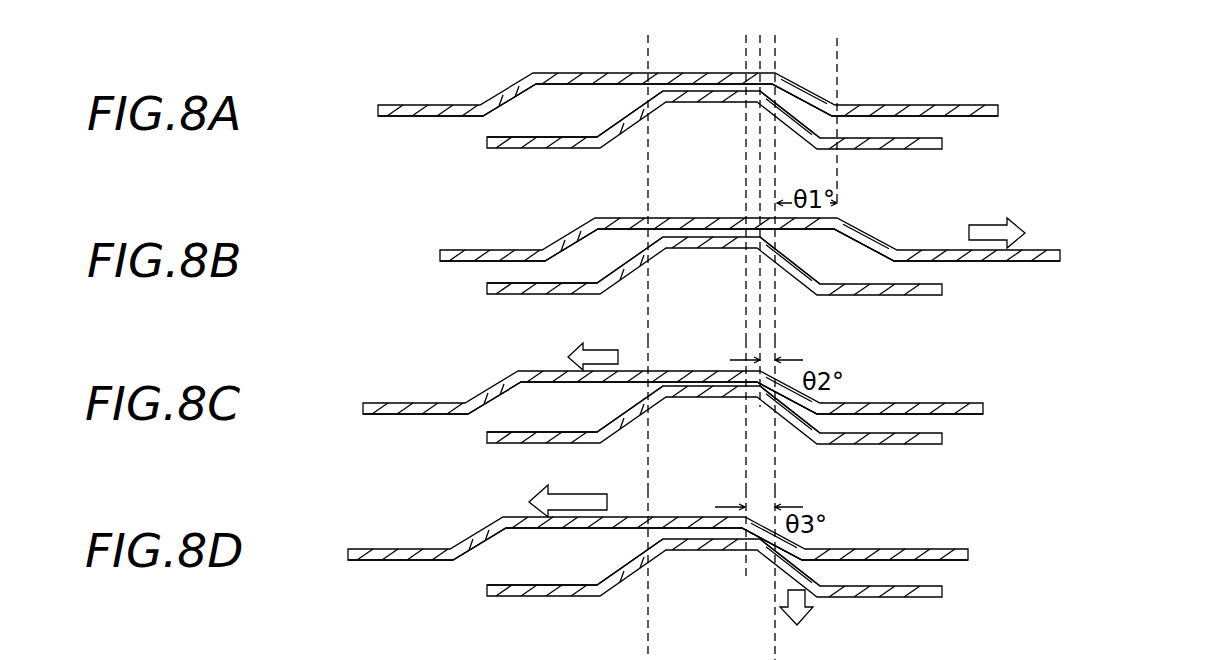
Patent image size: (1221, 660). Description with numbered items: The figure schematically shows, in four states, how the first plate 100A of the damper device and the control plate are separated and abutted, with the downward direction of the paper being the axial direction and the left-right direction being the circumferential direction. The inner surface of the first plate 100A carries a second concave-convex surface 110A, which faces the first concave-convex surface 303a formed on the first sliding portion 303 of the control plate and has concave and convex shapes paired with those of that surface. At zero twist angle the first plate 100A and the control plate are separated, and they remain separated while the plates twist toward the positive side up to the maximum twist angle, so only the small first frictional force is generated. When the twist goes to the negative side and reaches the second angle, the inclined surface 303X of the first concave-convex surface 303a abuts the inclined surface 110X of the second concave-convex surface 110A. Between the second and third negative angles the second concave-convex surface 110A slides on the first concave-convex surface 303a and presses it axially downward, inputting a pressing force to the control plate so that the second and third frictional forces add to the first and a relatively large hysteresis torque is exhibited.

In FIG. 8A, the first plate 100A is at (975, 102).
In FIG. 8B, the first plate 100A is at (1045, 246).
In FIG. 8C, the first plate 100A is at (965, 400).
In FIG. 8D, the first plate 100A is at (943, 548).
In FIG. 8A, the second concave-convex surface 110A is at (963, 116).
In FIG. 8B, the second concave-convex surface 110A is at (1030, 262).
In FIG. 8C, the second concave-convex surface 110A is at (950, 414).
In FIG. 8D, the second concave-convex surface 110A is at (930, 561).
In FIG. 8A, the inclined surface of the second concave-convex surface 110X is at (806, 106).
In FIG. 8B, the inclined surface of the second concave-convex surface 110X is at (868, 258).
In FIG. 8C, the inclined surface of the second concave-convex surface 110X is at (806, 404).
In FIG. 8D, the inclined surface of the second concave-convex surface 110X is at (790, 552).
In FIG. 8A, the first sliding portion 303 is at (493, 150).
In FIG. 8B, the first sliding portion 303 is at (493, 296).
In FIG. 8C, the first sliding portion 303 is at (493, 445).
In FIG. 8D, the first sliding portion 303 is at (493, 598).
In FIG. 8A, the first concave-convex surface 303a is at (506, 136).
In FIG. 8B, the first concave-convex surface 303a is at (506, 281).
In FIG. 8C, the first concave-convex surface 303a is at (506, 431).
In FIG. 8D, the first concave-convex surface 303a is at (506, 584).
In FIG. 8A, the inclined surface of the first concave-convex surface 303X is at (806, 124).
In FIG. 8B, the inclined surface of the first concave-convex surface 303X is at (803, 266).
In FIG. 8C, the inclined surface of the first concave-convex surface 303X is at (822, 425).
In FIG. 8D, the inclined surface of the first concave-convex surface 303X is at (806, 577).